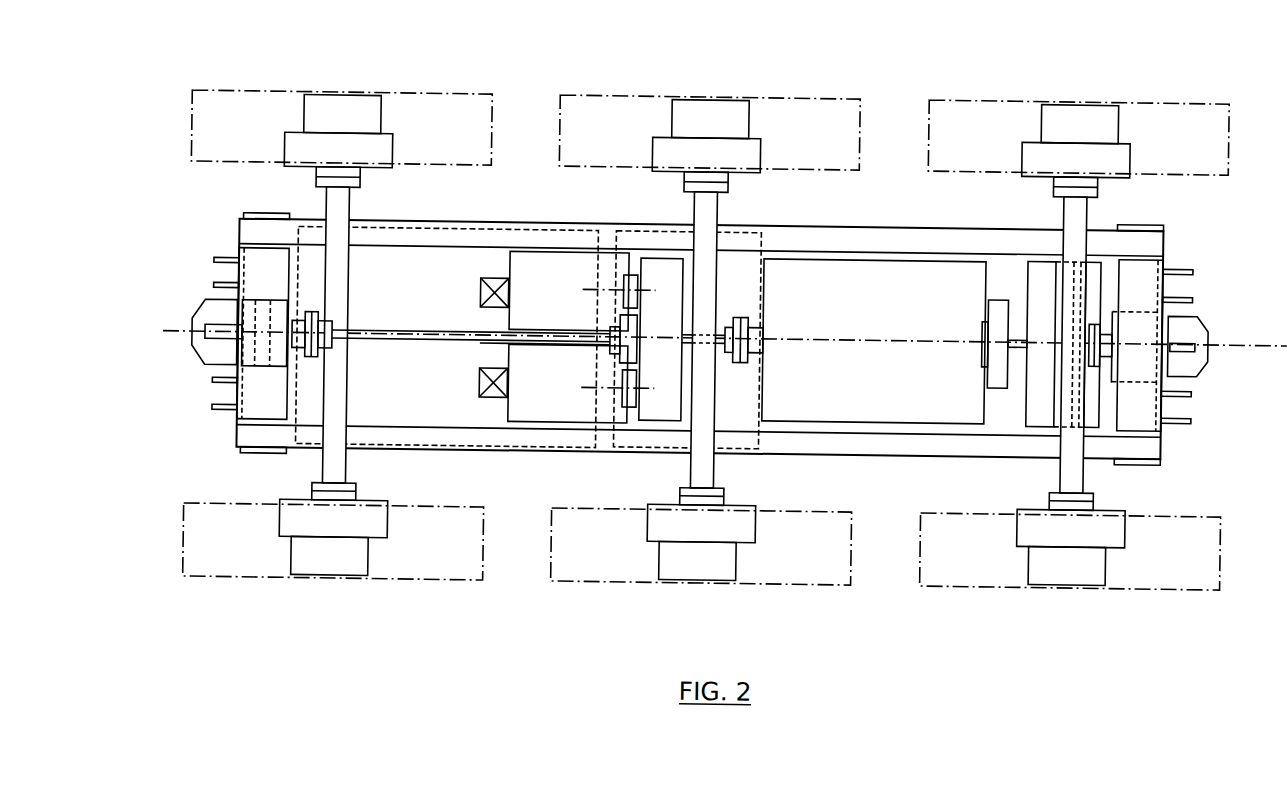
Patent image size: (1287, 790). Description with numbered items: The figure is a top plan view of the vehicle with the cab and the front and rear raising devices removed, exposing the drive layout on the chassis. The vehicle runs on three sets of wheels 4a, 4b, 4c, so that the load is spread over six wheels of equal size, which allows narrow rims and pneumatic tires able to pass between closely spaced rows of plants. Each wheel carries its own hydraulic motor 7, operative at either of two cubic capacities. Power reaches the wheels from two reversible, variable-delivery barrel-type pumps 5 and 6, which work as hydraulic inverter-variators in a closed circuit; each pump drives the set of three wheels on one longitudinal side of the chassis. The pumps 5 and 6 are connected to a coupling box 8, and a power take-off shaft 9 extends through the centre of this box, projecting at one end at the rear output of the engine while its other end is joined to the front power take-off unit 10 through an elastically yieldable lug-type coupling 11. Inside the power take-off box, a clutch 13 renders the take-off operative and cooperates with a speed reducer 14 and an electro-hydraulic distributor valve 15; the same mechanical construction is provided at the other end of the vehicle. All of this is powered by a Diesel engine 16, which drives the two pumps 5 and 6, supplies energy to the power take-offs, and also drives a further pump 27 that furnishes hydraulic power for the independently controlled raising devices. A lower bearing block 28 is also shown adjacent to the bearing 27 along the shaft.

The set of wheels 4a is at (213, 115).
The set of wheels 4b is at (581, 115).
The set of wheels 4c is at (950, 115).
The pump 5 is at (517, 404).
The pump 6 is at (531, 269).
The hydraulic motor 7 is at (333, 146).
The coupling box 8 is at (650, 274).
The power take-off shaft 9 is at (388, 333).
The front power take-off unit 10 is at (263, 299).
The elastically yieldable lug-type coupling 11 is at (310, 312).
The clutch 13 is at (263, 354).
The speed reducer 14 is at (248, 327).
The electro-hydraulic distributor valve 15 is at (275, 358).
The Diesel engine 16 is at (830, 273).
The pump 27 is at (496, 284).
The lower bearing 28 is at (481, 371).